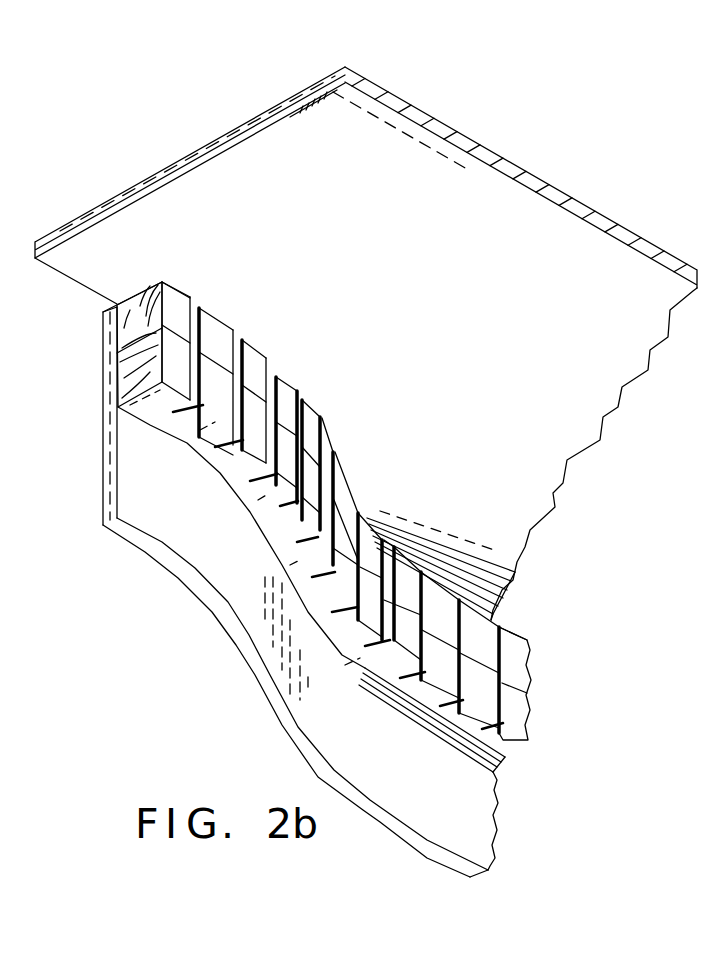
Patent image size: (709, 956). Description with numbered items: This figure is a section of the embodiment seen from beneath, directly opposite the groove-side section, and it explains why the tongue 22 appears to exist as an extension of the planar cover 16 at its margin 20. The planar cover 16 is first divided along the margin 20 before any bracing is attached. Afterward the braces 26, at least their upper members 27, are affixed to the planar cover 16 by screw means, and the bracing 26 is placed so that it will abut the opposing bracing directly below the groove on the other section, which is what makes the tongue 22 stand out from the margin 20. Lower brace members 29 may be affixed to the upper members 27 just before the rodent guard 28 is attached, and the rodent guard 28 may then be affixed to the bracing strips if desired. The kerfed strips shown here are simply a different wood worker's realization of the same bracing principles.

The planar cover 16 is at (403, 266).
The margin 20 is at (190, 157).
The tongue 22 is at (233, 135).
The braces 26 is at (132, 371).
The upper member 27 is at (252, 368).
The rodent guard 28 is at (387, 757).
The lower brace members 29 is at (197, 441).